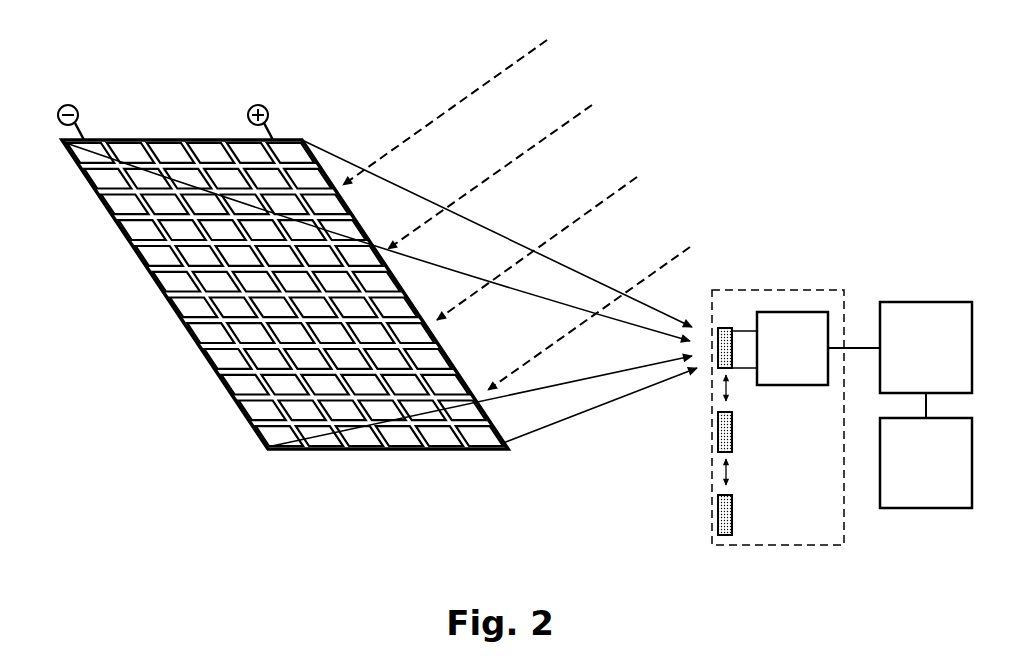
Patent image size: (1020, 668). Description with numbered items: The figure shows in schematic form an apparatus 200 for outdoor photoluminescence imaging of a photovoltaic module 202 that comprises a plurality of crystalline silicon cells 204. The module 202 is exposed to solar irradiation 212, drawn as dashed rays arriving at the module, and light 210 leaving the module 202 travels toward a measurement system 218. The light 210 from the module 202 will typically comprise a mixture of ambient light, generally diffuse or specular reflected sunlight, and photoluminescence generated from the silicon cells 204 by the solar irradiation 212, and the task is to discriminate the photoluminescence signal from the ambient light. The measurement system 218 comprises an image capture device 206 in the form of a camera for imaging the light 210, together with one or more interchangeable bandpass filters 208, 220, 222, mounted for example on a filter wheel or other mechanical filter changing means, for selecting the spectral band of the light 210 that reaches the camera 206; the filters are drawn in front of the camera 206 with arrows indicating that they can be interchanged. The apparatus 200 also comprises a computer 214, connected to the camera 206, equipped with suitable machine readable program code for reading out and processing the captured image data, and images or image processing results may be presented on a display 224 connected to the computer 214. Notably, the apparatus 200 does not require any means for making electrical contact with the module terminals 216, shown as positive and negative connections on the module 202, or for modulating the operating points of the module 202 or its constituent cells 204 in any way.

The apparatus 200 is at (832, 198).
The photovoltaic module 202 is at (163, 140).
The crystalline silicon cells 204 is at (208, 361).
The image capture device 206 is at (769, 362).
The interchangeable bandpass filter 208 is at (723, 328).
The light 210 is at (572, 417).
The solar irradiation 212 is at (637, 178).
The computer 214 is at (904, 362).
The module terminals 216 is at (68, 105).
The measurement system 218 is at (844, 517).
The interchangeable bandpass filter 220 is at (732, 431).
The interchangeable bandpass filter 222 is at (732, 516).
The display 224 is at (904, 477).